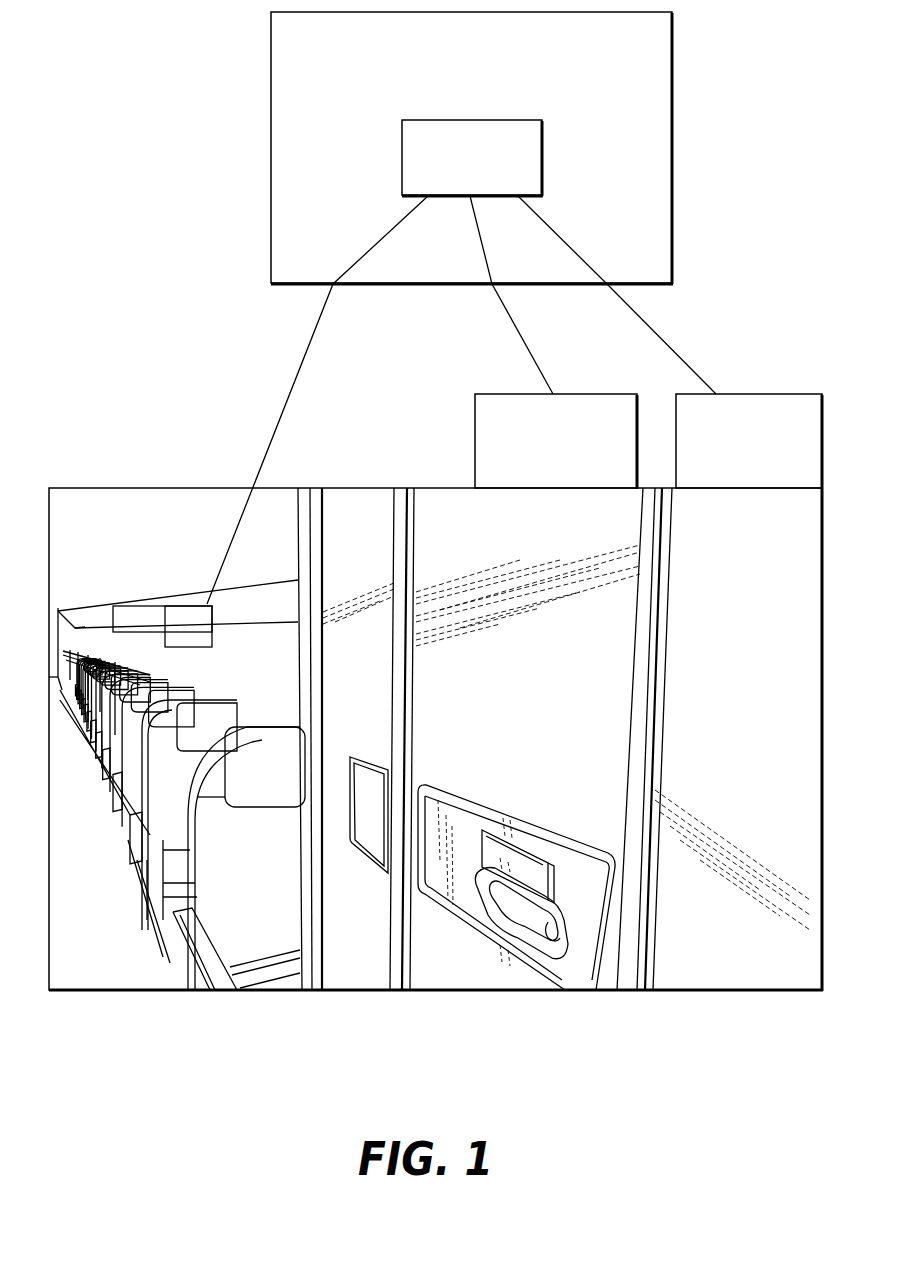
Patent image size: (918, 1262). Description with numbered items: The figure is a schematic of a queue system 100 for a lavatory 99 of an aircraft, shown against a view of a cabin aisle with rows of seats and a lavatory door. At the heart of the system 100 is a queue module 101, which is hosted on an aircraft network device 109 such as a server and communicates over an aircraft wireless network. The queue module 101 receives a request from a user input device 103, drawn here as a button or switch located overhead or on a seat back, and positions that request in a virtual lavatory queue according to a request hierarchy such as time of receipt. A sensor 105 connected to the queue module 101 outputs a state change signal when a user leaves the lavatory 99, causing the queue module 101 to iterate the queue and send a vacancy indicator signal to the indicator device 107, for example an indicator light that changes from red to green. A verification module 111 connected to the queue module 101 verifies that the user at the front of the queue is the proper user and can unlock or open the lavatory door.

The lavatory 99 is at (728, 600).
The queue system 100 is at (788, 214).
The queue module 101 is at (492, 168).
The user input device 103 is at (192, 626).
The sensor 105 is at (575, 457).
The indicator device 107 is at (128, 606).
The aircraft network device 109 is at (620, 60).
The verification module 111 is at (768, 457).